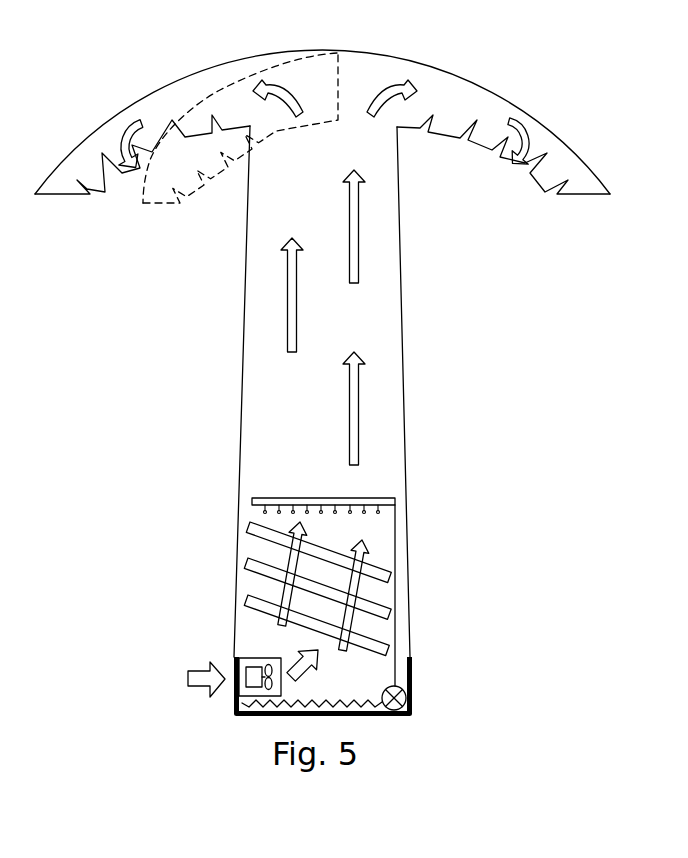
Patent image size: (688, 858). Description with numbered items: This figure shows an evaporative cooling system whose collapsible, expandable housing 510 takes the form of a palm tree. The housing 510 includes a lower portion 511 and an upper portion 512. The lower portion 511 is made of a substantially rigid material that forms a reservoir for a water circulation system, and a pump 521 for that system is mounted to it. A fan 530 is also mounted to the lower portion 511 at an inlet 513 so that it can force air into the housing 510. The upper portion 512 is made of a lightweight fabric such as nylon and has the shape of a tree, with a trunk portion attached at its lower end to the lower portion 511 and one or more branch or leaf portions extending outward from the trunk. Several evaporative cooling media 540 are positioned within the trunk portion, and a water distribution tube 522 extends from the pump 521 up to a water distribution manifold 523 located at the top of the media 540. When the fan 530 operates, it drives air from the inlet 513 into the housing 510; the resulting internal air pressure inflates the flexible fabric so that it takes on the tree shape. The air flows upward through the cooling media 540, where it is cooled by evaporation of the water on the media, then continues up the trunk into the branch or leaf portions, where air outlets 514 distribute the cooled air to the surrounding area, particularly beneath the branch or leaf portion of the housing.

The housing 510 is at (452, 603).
The lower portion 511 is at (408, 660).
The upper portion 512 is at (407, 580).
The inlet 513 is at (233, 691).
The air outlets 514 is at (504, 157).
The pump 521 is at (408, 690).
The water distribution tube 522 is at (397, 537).
The water distribution manifold 523 is at (377, 497).
The fan 530 is at (250, 658).
The evaporative cooling media 540 is at (249, 528).